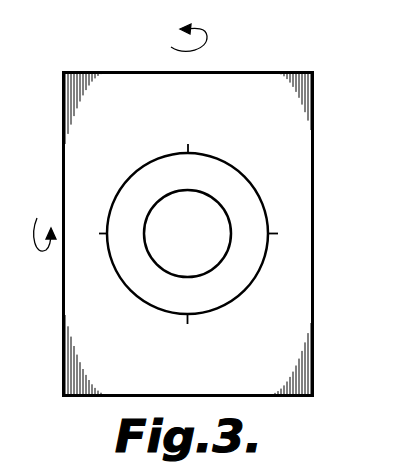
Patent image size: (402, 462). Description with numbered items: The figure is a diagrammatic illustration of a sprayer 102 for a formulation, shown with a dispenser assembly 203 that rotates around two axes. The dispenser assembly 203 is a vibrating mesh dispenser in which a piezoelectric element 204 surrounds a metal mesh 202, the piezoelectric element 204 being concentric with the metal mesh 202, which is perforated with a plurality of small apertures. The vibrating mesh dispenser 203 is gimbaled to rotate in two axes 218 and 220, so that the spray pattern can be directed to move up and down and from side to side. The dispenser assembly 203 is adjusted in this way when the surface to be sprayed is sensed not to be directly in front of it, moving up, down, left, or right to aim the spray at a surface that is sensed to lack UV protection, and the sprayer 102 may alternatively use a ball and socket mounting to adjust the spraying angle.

The sprayer 102 is at (272, 72).
The metal mesh 202 is at (226, 252).
The dispenser assembly 203 is at (234, 206).
The piezoelectric element 204 is at (262, 183).
The axis 218 is at (100, 232).
The axis 220 is at (189, 146).